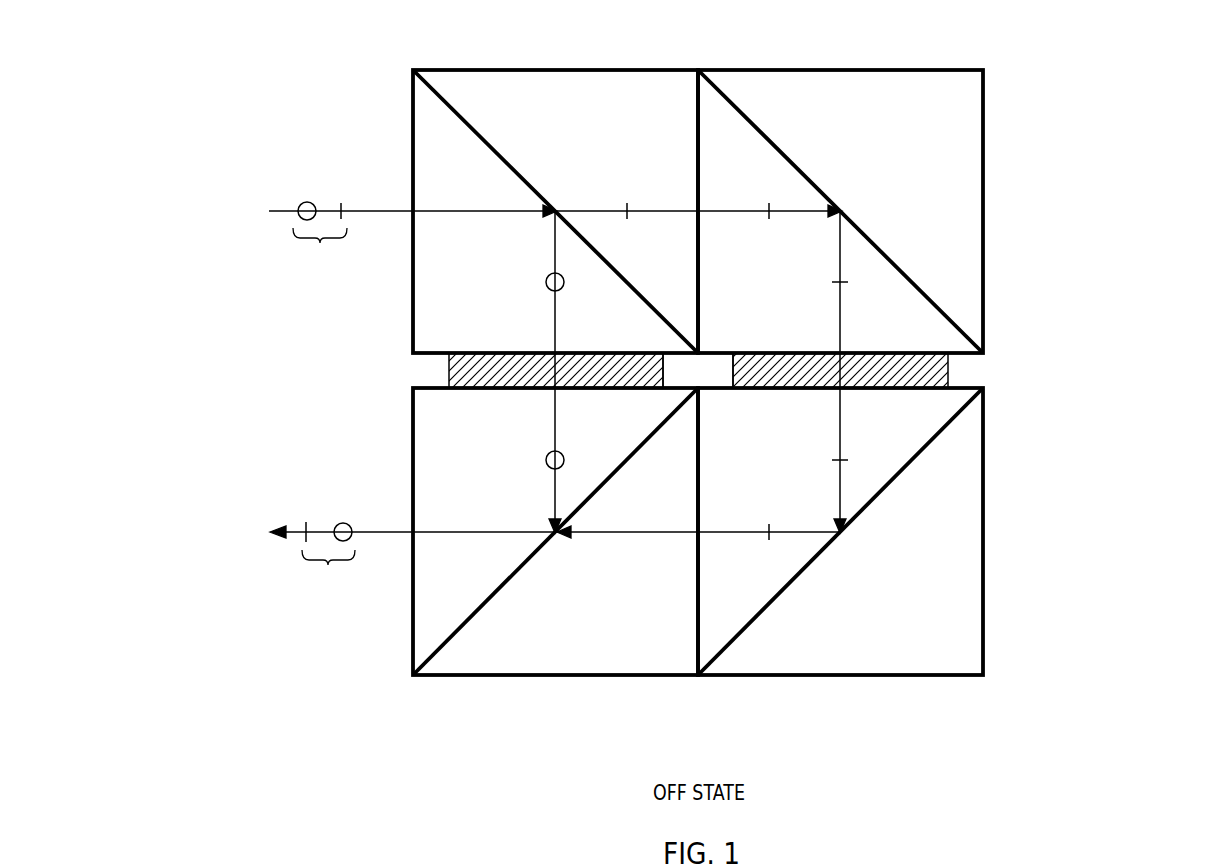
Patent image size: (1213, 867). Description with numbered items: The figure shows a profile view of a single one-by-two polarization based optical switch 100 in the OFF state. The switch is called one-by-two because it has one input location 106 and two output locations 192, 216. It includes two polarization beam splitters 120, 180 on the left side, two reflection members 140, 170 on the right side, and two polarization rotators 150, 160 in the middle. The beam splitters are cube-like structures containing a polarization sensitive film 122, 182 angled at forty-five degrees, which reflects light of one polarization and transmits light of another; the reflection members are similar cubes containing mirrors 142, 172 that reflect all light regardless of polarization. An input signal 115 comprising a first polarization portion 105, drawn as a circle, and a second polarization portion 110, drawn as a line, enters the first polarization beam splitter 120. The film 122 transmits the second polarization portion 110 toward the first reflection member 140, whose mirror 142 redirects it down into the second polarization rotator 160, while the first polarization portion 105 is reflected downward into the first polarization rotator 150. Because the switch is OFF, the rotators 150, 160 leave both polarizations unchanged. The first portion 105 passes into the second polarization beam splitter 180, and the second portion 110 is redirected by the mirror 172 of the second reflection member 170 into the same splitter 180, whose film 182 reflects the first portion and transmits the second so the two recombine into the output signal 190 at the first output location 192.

The optical switch 100 is at (1080, 130).
The first polarization portion 105 is at (300, 204).
The input location 106 is at (403, 198).
The second polarization portion 110 is at (341, 203).
The input signal 115 is at (320, 254).
The first polarization beam splitter 120 is at (556, 69).
The polarization sensitive film 122 is at (441, 98).
The first reflection member 140 is at (841, 69).
The mirror 142 is at (955, 300).
The first polarization rotator 150 is at (449, 378).
The second polarization rotator 160 is at (948, 378).
The second reflection member 170 is at (841, 677).
The mirror 172 is at (750, 628).
The second polarization beam splitter 180 is at (555, 677).
The polarization sensitive film 182 is at (446, 642).
The output signal 190 is at (328, 575).
The first output location 192 is at (403, 516).
The second output location 216 is at (638, 690).